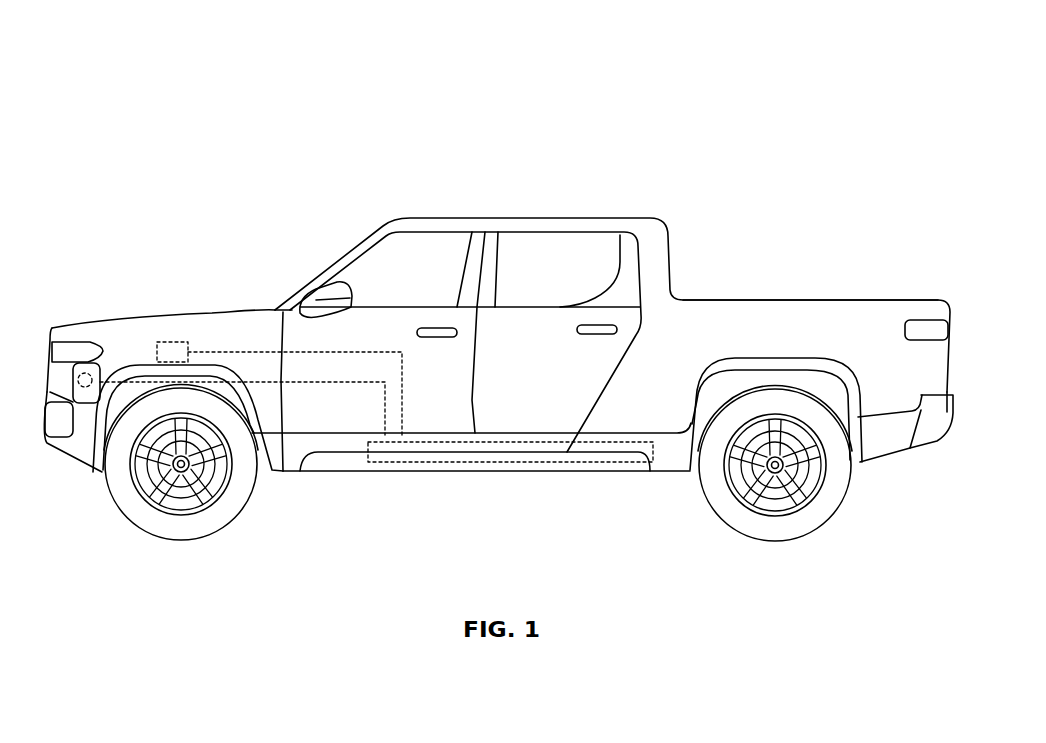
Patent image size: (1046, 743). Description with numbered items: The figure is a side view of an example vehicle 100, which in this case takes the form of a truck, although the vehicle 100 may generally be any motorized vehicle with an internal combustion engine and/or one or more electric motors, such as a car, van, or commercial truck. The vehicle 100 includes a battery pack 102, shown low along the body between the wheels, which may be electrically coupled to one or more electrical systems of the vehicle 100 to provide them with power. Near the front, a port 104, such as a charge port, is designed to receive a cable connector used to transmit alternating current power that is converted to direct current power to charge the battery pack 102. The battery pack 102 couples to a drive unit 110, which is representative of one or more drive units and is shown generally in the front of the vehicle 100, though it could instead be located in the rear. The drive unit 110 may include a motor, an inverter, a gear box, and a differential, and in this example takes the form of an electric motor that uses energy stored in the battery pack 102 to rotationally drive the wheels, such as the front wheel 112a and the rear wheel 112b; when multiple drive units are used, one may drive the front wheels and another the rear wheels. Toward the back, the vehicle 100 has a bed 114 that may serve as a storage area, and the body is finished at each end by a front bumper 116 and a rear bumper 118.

The vehicle 100 is at (152, 90).
The battery pack 102 is at (368, 447).
The port 104 is at (76, 365).
The drive unit 110 is at (167, 342).
The wheel 112a is at (105, 488).
The wheel 112b is at (848, 488).
The bed 114 is at (810, 278).
The bumper 116 is at (47, 448).
The bumper 118 is at (940, 441).